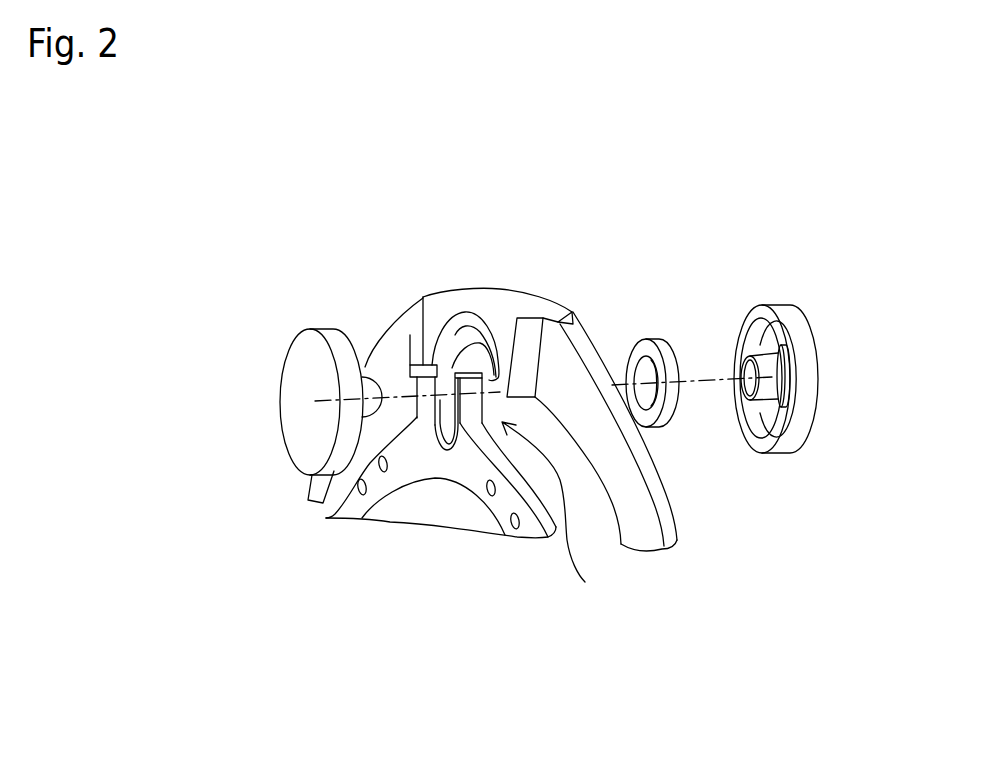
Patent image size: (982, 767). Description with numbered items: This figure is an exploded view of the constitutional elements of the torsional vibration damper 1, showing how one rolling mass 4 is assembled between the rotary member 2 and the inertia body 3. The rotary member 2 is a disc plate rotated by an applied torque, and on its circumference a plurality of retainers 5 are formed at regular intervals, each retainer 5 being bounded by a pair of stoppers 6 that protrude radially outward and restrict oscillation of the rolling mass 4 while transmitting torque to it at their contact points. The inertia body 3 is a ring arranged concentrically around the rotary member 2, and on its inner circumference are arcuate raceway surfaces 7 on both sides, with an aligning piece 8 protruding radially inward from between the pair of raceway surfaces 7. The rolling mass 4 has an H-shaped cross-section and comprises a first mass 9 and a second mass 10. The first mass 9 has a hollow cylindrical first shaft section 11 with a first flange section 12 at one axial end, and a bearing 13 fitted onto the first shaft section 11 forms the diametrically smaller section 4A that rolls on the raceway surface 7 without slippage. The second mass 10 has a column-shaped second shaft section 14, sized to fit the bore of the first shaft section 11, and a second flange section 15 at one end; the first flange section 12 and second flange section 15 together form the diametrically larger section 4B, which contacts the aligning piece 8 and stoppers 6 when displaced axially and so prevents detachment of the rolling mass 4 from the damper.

The torsional vibration damper 1 is at (603, 297).
The rotary member 2 is at (467, 523).
The inertia body 3 is at (647, 518).
The rolling mass 4 is at (816, 299).
The diametrically smaller section 4A is at (652, 383).
The diametrically larger section 4B is at (776, 379).
The retainer 5 is at (548, 517).
The stopper 6 is at (457, 371).
The raceway surface 7 is at (451, 373).
The aligning piece 8 is at (456, 373).
The first mass 9 is at (773, 557).
The second mass 10 is at (353, 632).
The first shaft section 11 is at (757, 402).
The first flange section 12 is at (802, 438).
The bearing 13 is at (663, 348).
The second shaft section 14 is at (368, 420).
The second flange section 15 is at (323, 503).